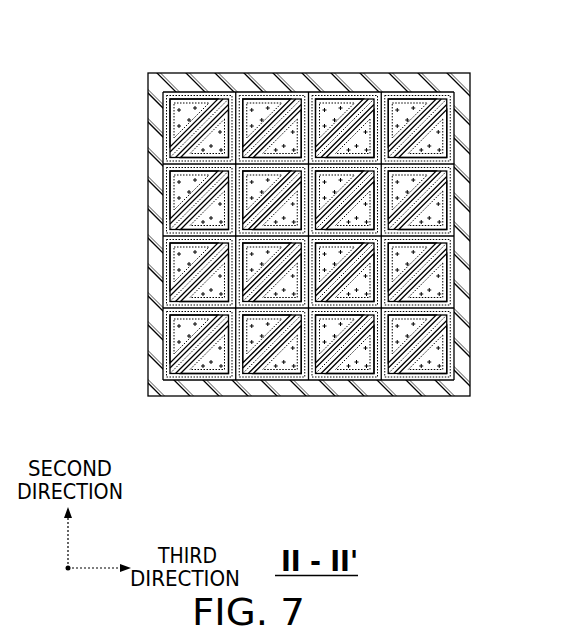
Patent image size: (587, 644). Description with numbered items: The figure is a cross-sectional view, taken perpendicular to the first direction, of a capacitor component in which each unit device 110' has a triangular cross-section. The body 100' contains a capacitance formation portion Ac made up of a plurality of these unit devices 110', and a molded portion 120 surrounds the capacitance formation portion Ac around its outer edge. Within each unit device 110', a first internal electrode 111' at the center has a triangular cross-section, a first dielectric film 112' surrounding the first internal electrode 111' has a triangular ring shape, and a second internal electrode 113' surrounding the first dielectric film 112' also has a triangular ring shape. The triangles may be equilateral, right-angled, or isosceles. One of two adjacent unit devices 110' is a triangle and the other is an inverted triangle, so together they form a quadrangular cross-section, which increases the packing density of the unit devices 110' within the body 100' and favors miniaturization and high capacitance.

The body 100' is at (293, 208).
The unit device 110' is at (129, 122).
The first internal electrode 111' is at (154, 117).
The first dielectric film 112' is at (158, 129).
The second internal electrode 113' is at (156, 131).
The molded portion 120 is at (163, 233).
The capacitance formation portion Ac is at (238, 229).